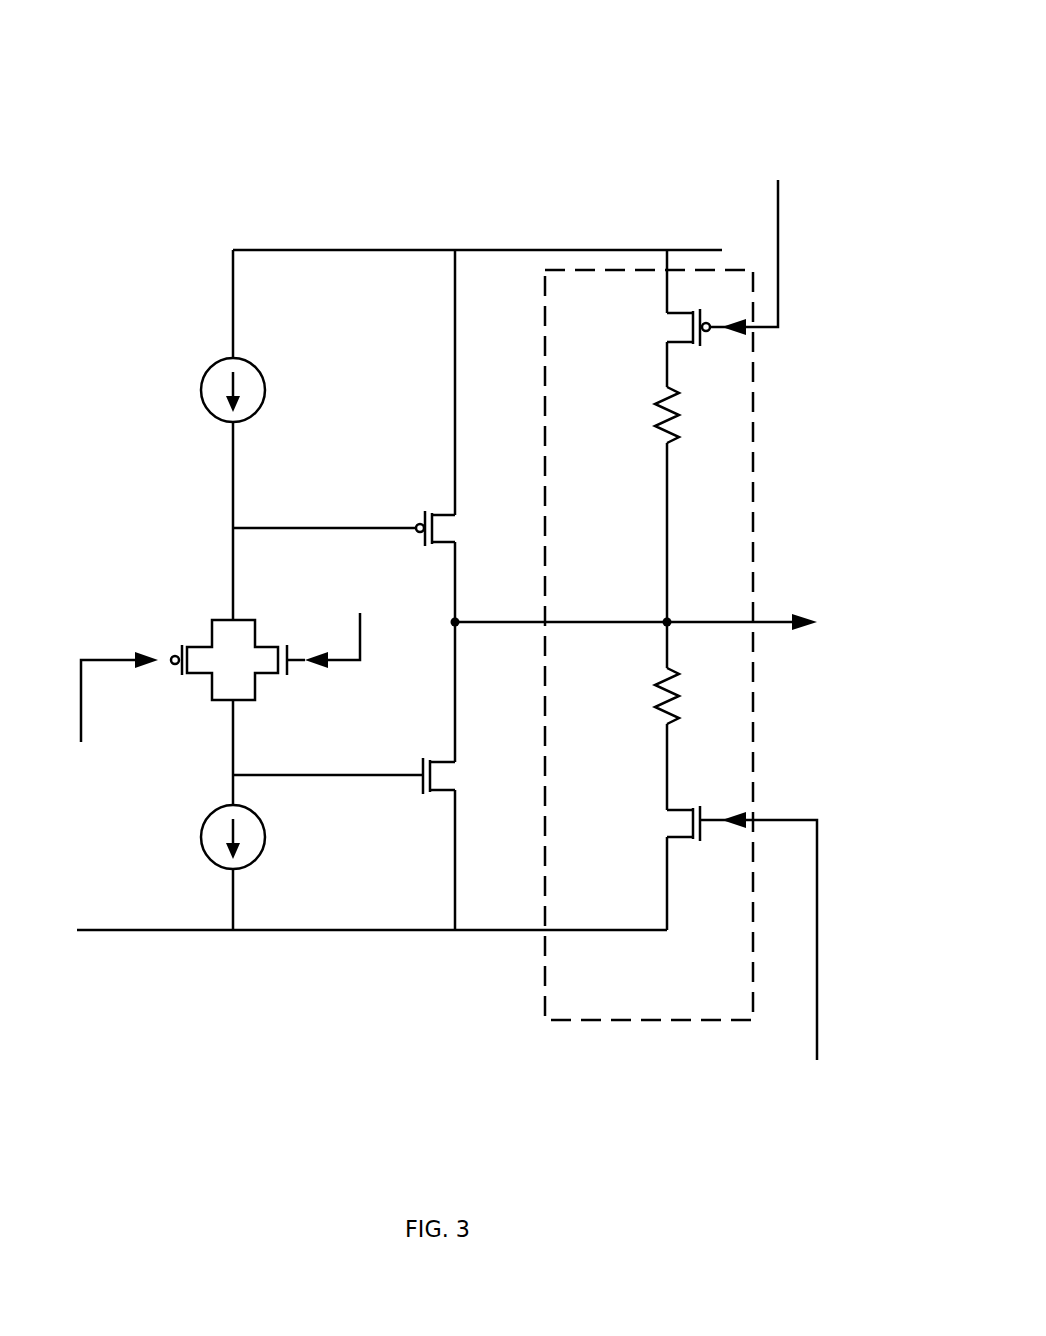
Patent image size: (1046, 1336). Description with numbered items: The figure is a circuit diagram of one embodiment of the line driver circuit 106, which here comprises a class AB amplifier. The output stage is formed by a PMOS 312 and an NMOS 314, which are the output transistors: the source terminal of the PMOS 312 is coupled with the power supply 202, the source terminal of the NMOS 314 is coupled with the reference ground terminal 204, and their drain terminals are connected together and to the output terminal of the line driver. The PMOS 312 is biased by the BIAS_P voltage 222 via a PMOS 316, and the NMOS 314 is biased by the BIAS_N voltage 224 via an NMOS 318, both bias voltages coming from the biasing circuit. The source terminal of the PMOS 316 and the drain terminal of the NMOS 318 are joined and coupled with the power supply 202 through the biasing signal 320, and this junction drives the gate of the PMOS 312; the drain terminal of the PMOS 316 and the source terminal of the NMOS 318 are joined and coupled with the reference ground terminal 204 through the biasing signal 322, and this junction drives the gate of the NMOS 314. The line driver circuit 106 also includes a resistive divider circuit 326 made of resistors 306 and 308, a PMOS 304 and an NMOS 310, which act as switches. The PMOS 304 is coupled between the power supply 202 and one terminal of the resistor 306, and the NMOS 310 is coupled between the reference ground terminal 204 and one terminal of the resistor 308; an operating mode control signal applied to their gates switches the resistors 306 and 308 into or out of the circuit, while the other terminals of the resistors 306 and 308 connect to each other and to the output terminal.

The line driver circuit 106 is at (220, 50).
The power supply 202 is at (570, 248).
The reference ground terminal 204 is at (201, 932).
The BIAS_P voltage 222 is at (134, 635).
The BIAS_N voltage 224 is at (346, 690).
The PMOS 304 is at (667, 325).
The resistor 306 is at (653, 425).
The resistor 308 is at (651, 705).
The NMOS 310 is at (667, 820).
The PMOS 312 is at (460, 520).
The NMOS 314 is at (457, 778).
The PMOS 316 is at (204, 645).
The NMOS 318 is at (270, 645).
The biasing signal (I_BIASED_SIGNAL) 320 is at (267, 392).
The biasing signal (I_BIASED_SIGNAL) 322 is at (267, 840).
The resistive divider circuit 326 is at (586, 1022).